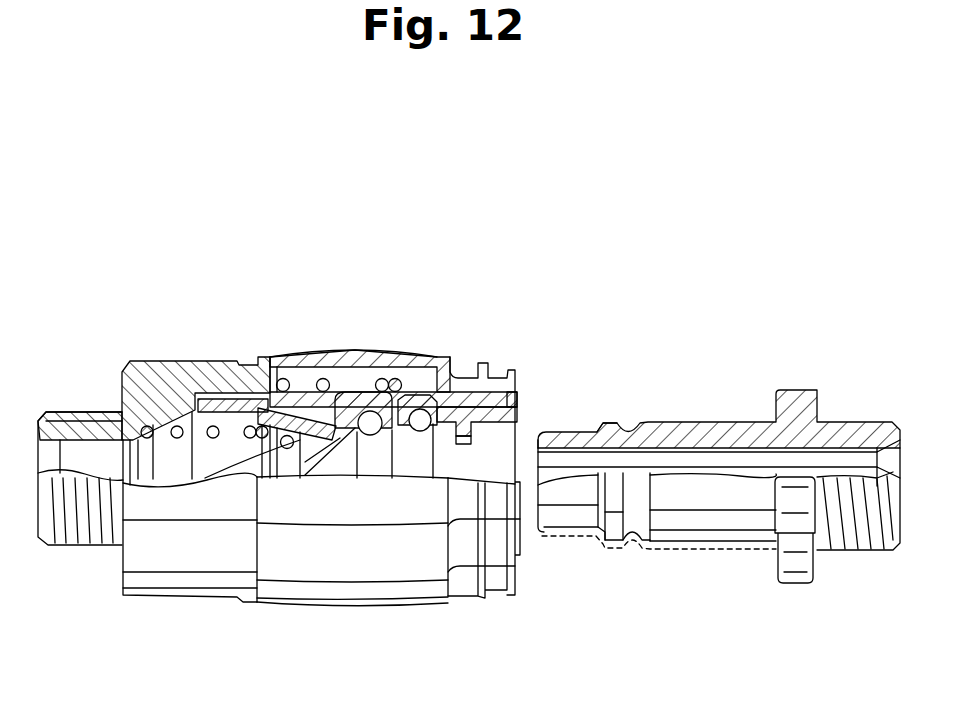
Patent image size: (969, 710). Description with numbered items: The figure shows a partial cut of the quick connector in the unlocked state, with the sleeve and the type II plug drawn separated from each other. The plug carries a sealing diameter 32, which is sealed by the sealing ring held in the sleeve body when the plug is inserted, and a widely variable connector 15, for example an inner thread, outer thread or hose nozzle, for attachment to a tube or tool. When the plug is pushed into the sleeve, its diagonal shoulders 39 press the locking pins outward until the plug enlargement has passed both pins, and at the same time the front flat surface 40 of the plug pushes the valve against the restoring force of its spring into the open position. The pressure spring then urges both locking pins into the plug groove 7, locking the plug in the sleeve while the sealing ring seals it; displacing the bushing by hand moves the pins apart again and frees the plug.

The sealing diameter 32 is at (556, 415).
The diagonal shoulders 39 is at (596, 416).
The plug groove 7 is at (641, 416).
The connector 15 is at (852, 415).
The front flat surface 40 is at (532, 521).